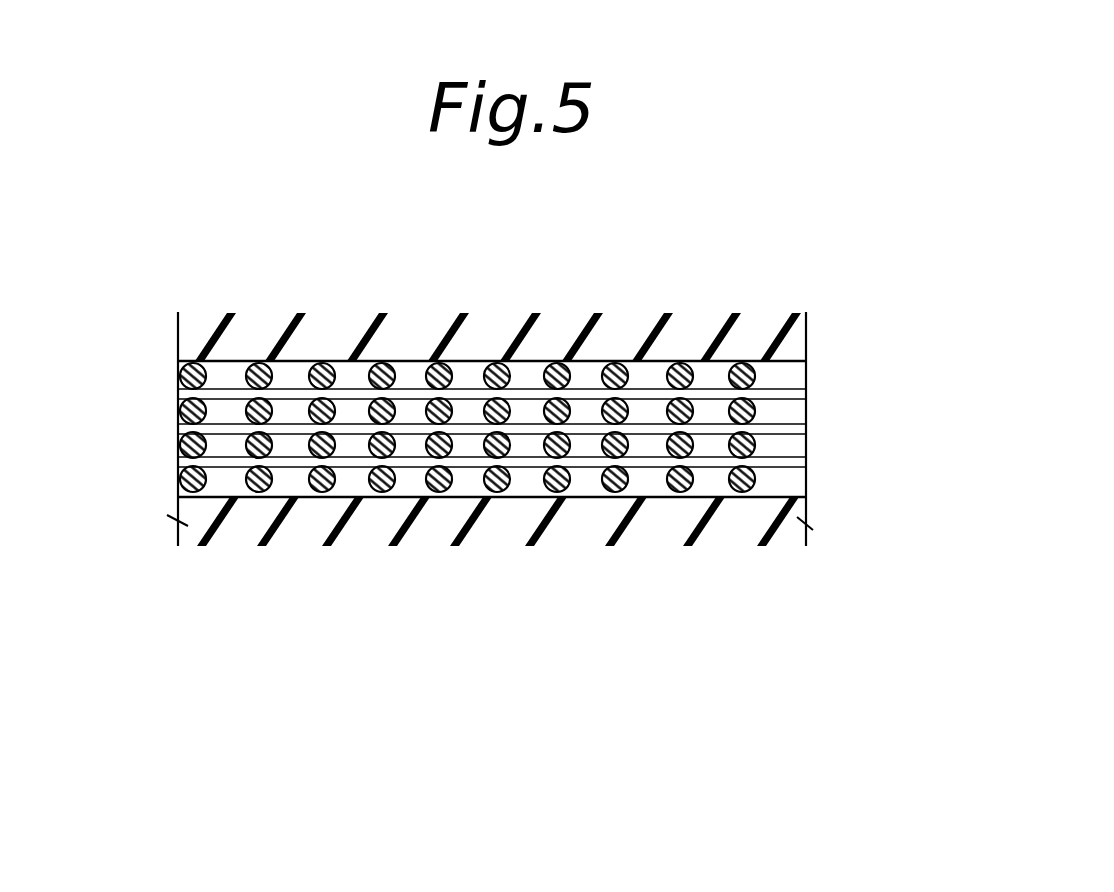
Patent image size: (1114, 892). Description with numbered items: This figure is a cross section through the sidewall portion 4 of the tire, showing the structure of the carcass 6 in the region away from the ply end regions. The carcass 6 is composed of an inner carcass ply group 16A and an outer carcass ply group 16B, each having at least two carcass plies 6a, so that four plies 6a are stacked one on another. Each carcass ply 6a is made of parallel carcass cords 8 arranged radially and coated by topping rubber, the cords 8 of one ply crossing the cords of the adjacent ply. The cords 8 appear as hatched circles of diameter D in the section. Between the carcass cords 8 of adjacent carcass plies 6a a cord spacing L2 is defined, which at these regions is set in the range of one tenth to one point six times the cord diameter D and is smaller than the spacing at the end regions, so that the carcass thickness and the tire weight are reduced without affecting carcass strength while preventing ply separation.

The sidewall portion 4 is at (545, 572).
The carcass 6 is at (997, 382).
The carcass ply 6a is at (790, 373).
The carcass cord 8 is at (448, 453).
The inner carcass ply group 16A is at (937, 443).
The outer carcass ply group 16B is at (937, 370).
The diameter of carcass cord D is at (334, 380).
The cord spacing L2 is at (145, 380).